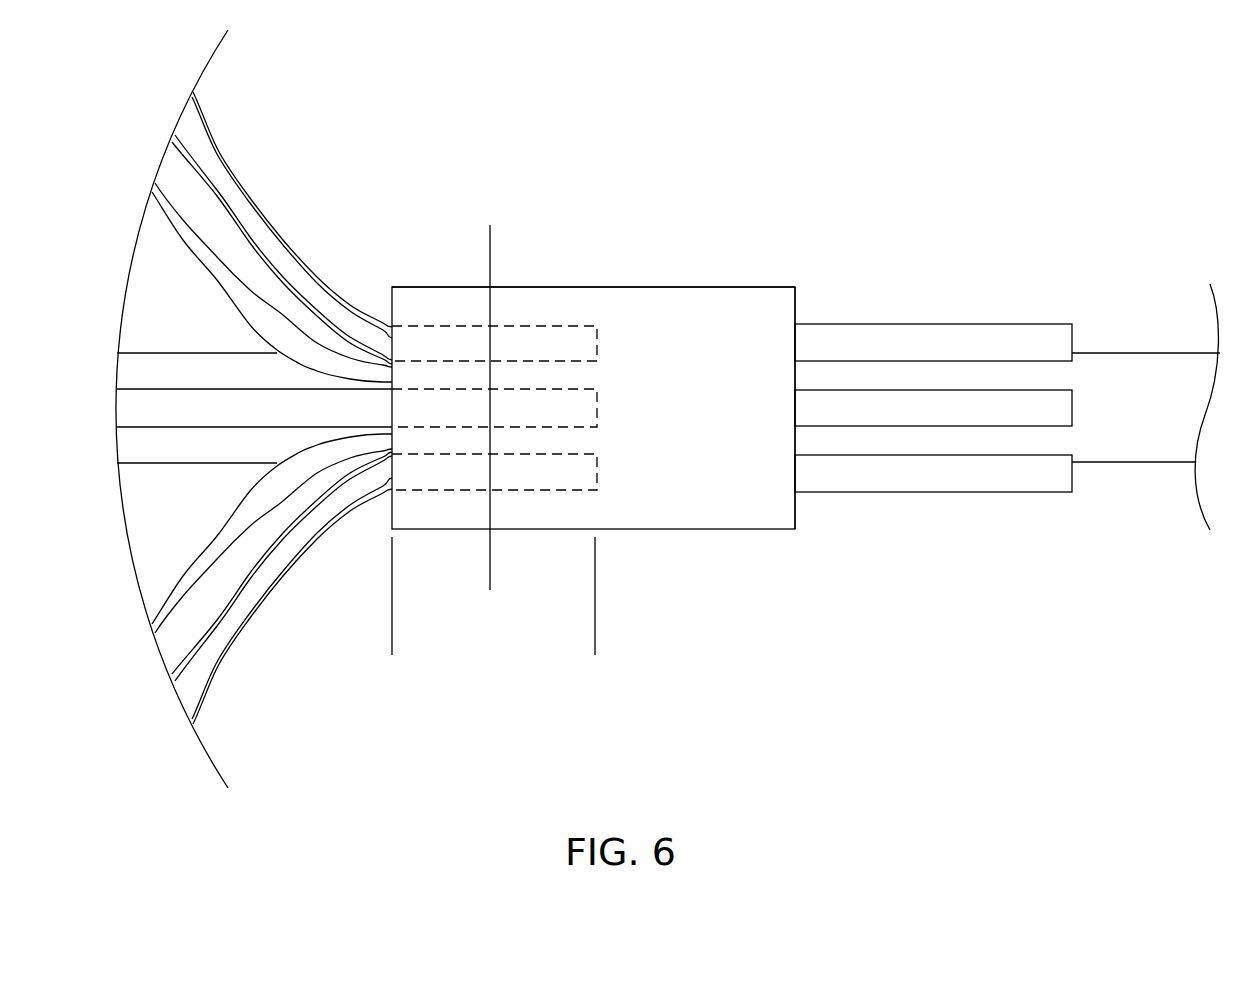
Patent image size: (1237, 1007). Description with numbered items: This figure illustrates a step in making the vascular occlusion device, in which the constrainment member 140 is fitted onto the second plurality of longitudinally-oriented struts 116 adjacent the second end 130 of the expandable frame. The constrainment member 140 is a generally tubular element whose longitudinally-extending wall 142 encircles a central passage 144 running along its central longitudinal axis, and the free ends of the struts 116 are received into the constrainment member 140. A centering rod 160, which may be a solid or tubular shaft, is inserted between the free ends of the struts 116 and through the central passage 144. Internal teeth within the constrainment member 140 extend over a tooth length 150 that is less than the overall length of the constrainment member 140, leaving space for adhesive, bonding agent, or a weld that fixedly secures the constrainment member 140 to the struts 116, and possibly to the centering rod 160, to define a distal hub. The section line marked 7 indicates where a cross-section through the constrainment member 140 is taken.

The second end 130 is at (738, 124).
The constrainment member 140 is at (575, 268).
The longitudinally-extending wall 142 is at (695, 290).
The central passage 144 is at (812, 377).
The second plurality of longitudinally-oriented struts 116 is at (1025, 323).
The centering rod 160 is at (1145, 352).
The tooth length 150 is at (583, 647).
The section line 7- 7 is at (528, 590).